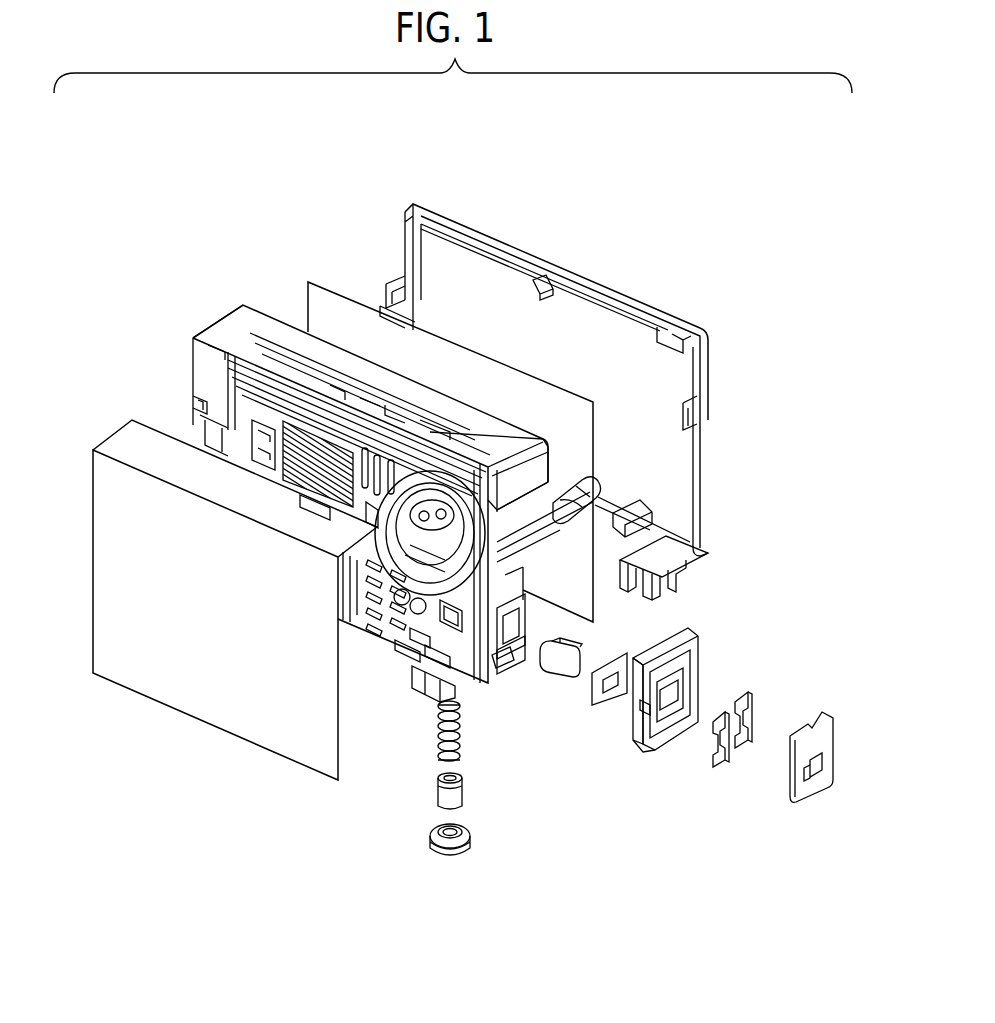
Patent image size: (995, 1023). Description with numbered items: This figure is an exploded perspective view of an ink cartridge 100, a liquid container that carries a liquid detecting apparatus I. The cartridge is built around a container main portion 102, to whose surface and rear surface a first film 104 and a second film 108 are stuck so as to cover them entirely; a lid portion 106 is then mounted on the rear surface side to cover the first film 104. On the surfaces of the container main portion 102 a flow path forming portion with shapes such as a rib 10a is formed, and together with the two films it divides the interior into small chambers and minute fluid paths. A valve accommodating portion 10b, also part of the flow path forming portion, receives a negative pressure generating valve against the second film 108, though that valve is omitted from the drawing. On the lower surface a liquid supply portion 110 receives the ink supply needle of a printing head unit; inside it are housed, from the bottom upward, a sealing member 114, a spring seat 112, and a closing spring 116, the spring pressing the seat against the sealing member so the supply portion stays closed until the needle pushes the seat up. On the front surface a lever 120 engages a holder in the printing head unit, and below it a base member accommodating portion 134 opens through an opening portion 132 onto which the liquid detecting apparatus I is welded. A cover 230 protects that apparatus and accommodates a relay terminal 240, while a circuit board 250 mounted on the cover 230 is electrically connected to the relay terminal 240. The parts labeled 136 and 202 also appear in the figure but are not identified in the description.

The ink cartridge 100 is at (268, 212).
The container main portion 102 is at (190, 382).
The rib 10a is at (254, 352).
The valve accommodating portion 10b is at (432, 440).
The first film 104 is at (317, 300).
The lid portion 106 is at (555, 268).
The second film 108 is at (230, 716).
The liquid supply portion 110 is at (425, 686).
The spring seat 112 is at (438, 794).
The sealing member 114 is at (430, 838).
The closing spring 116 is at (437, 732).
The lever 120 is at (597, 497).
The opening portion 132 is at (526, 622).
The base member accommodating portion 134 is at (530, 637).
The terminal 136 is at (505, 662).
The liquid detecting apparatus I is at (567, 677).
The cover plate 202 is at (617, 700).
The cover 230 is at (692, 630).
The relay terminal 240 is at (752, 715).
The circuit board 250 is at (790, 786).